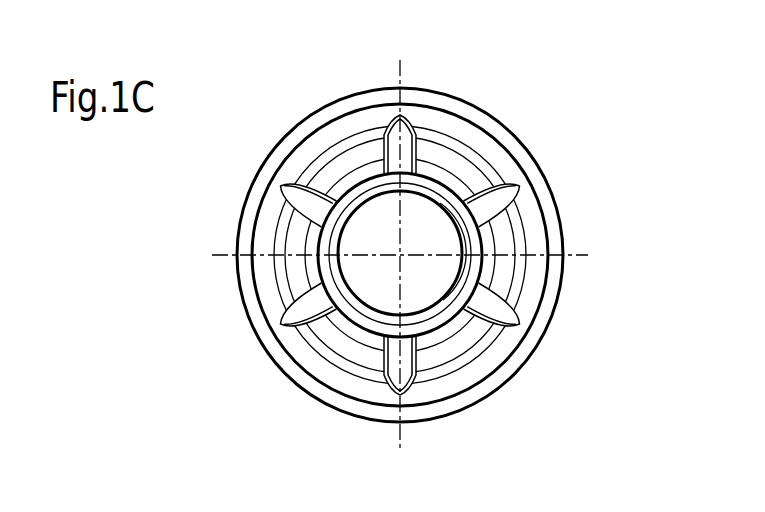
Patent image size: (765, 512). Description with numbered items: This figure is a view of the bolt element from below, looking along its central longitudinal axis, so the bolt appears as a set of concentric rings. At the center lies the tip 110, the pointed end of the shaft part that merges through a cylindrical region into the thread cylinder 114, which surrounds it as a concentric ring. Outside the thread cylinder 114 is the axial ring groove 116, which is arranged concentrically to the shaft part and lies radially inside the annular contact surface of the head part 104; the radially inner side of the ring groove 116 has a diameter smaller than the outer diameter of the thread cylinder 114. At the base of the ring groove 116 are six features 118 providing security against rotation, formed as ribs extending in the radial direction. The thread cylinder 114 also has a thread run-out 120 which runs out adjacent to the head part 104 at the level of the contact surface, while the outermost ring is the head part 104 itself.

The head part 104 is at (345, 107).
The tip 110 is at (427, 268).
The thread cylinder 114 is at (327, 242).
The axial ring groove 116 is at (332, 170).
The features providing security against rotation 118 is at (493, 198).
The thread run-out 120 is at (265, 278).